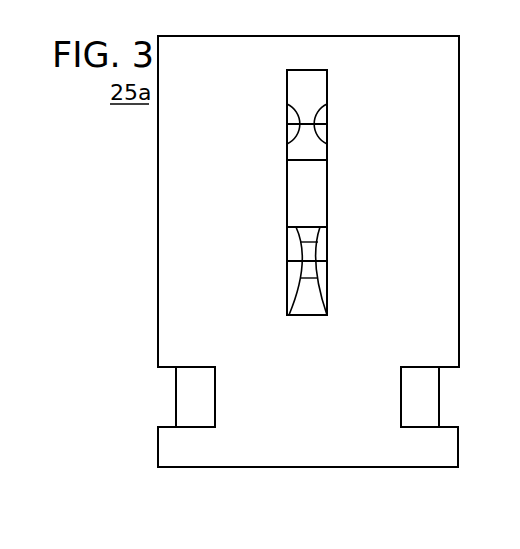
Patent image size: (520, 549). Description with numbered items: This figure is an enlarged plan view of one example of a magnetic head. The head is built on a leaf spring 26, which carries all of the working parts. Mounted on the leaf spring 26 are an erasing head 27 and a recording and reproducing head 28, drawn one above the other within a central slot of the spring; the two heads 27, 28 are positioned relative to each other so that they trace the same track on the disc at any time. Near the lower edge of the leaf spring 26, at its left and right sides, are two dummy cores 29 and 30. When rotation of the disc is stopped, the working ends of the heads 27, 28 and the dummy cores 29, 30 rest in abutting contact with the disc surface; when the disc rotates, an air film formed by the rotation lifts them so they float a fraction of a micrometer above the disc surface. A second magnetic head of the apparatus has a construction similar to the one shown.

The leaf spring 26 is at (160, 284).
The erasing head 27 is at (322, 92).
The recording and reproducing head 28 is at (322, 248).
The dummy core 29 is at (184, 399).
The dummy core 30 is at (430, 399).